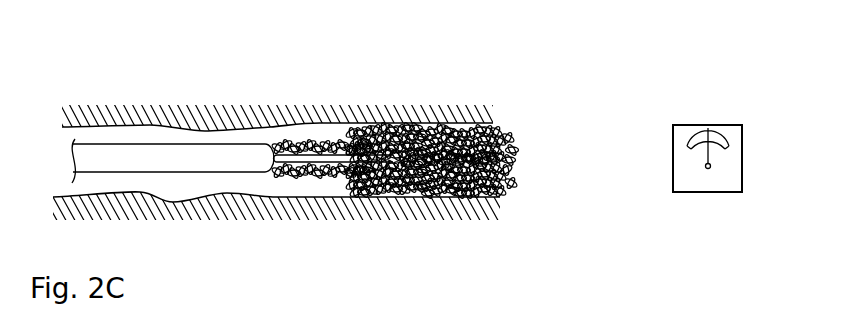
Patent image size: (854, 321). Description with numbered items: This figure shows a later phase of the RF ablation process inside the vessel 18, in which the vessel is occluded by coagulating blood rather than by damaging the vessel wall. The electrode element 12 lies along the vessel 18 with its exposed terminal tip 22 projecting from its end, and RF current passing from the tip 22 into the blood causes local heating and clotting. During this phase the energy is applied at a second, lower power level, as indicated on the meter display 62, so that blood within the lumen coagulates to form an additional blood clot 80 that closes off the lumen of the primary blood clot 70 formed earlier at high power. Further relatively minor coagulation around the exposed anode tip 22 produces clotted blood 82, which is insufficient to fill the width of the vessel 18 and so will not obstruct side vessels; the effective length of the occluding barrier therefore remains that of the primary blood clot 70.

The electrode element 12 is at (188, 165).
The vessel 18 is at (358, 126).
The exposed terminal tip 22 is at (323, 161).
The meter display 62 is at (697, 113).
The blood clot 70 is at (426, 124).
The additional blood clot 80 is at (490, 160).
The clotted blood 82 is at (304, 140).